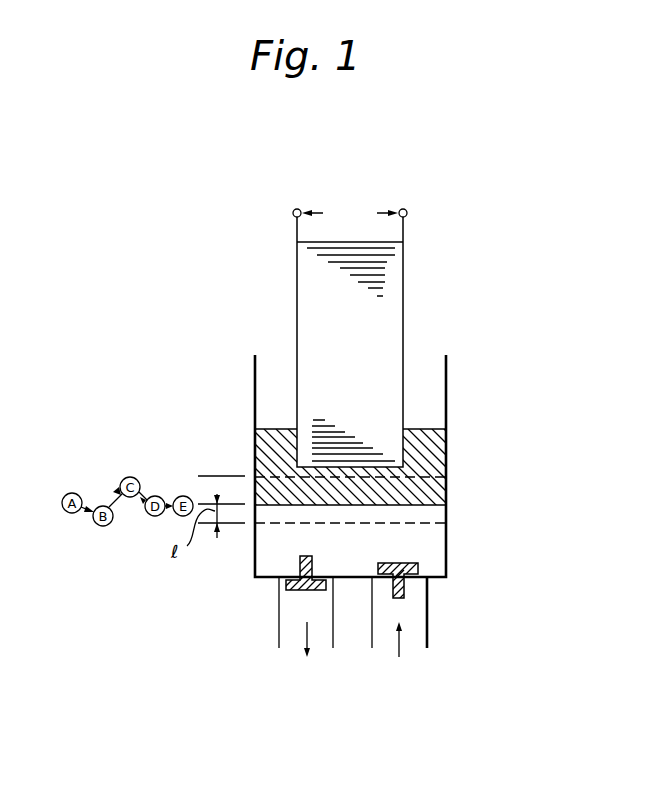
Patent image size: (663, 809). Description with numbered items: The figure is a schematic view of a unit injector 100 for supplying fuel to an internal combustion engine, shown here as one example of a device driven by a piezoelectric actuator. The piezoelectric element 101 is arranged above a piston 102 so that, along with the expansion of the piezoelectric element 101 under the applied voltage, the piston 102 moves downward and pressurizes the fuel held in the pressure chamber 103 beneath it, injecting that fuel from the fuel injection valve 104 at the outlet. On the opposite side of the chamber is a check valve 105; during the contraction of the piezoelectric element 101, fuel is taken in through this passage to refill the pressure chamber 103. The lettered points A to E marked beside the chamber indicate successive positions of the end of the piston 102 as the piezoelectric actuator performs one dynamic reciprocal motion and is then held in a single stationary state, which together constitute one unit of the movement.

The unit injector 100 is at (246, 372).
The piezoelectric element 101 is at (395, 322).
The piston 102 is at (440, 445).
The pressure chamber 103 is at (435, 541).
The fuel injection valve 104 is at (298, 592).
The check valve 105 is at (404, 596).